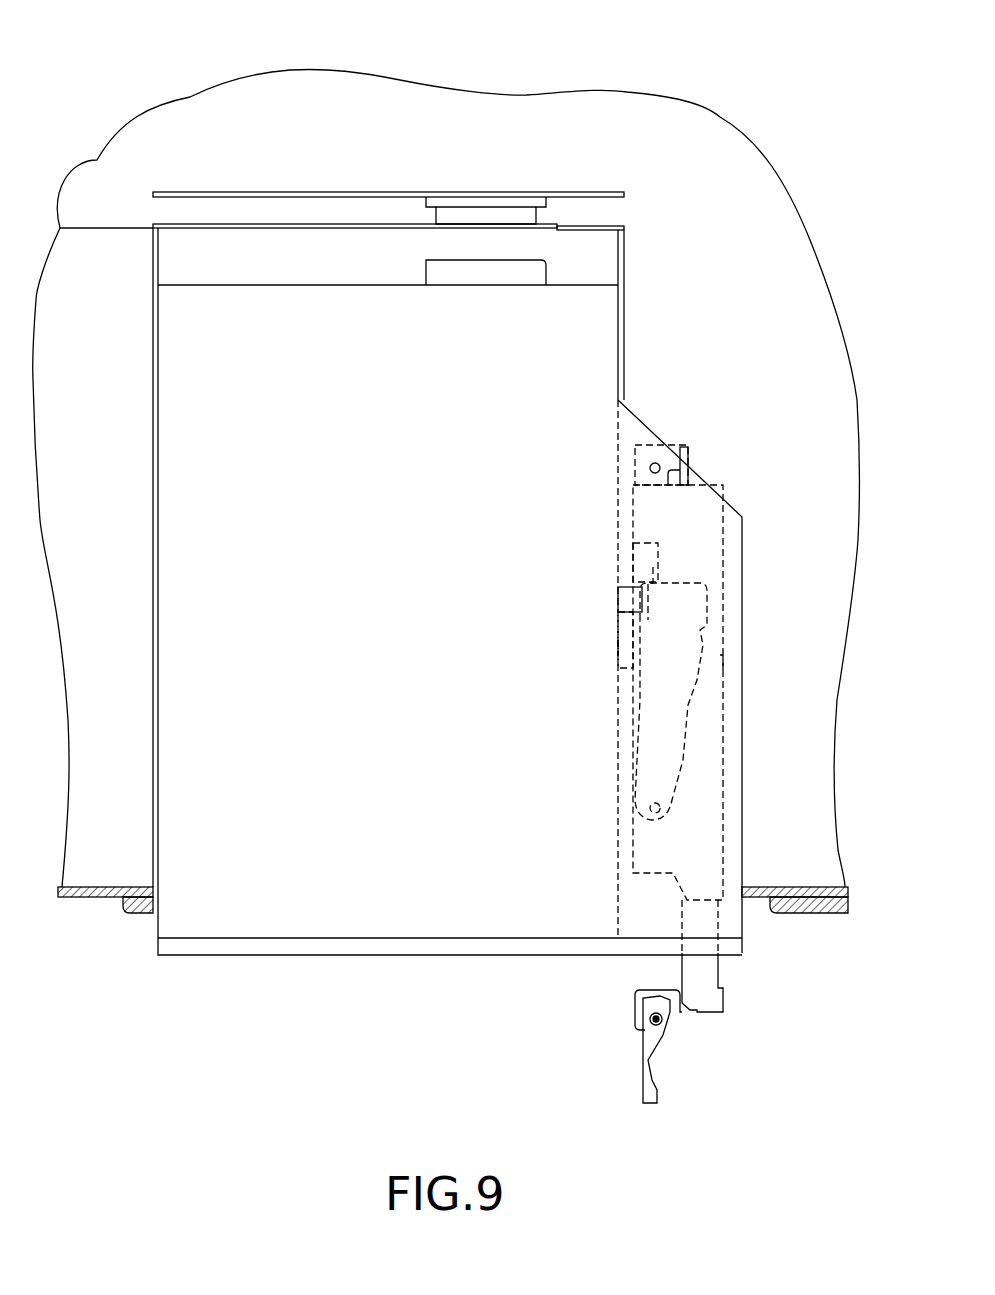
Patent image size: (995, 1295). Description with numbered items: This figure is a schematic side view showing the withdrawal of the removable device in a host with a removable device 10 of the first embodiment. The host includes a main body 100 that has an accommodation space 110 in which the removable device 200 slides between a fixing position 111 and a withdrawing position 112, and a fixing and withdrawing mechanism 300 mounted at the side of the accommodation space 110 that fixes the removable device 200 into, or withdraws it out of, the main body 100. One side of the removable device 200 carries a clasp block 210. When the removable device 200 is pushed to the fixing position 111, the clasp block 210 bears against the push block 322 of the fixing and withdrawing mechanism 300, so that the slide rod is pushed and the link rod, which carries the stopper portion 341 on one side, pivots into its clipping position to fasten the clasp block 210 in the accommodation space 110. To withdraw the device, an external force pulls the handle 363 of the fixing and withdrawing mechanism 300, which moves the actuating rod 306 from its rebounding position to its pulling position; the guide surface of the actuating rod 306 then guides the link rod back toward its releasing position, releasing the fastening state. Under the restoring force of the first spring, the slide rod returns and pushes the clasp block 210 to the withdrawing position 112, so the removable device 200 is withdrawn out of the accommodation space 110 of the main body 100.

The host with a removable device 10 is at (129, 41).
The main body 100 is at (88, 916).
The accommodation space 110 is at (610, 255).
The fixing position 111 is at (612, 560).
The withdrawing position 112 is at (612, 668).
The removable device 200 is at (305, 954).
The clasp block 210 is at (617, 647).
The fixing and withdrawing mechanism 300 is at (703, 1071).
The actuating rod 306 is at (720, 972).
The push block 322 is at (617, 603).
The stopper portion 341 is at (640, 620).
The handle 363 is at (645, 1073).